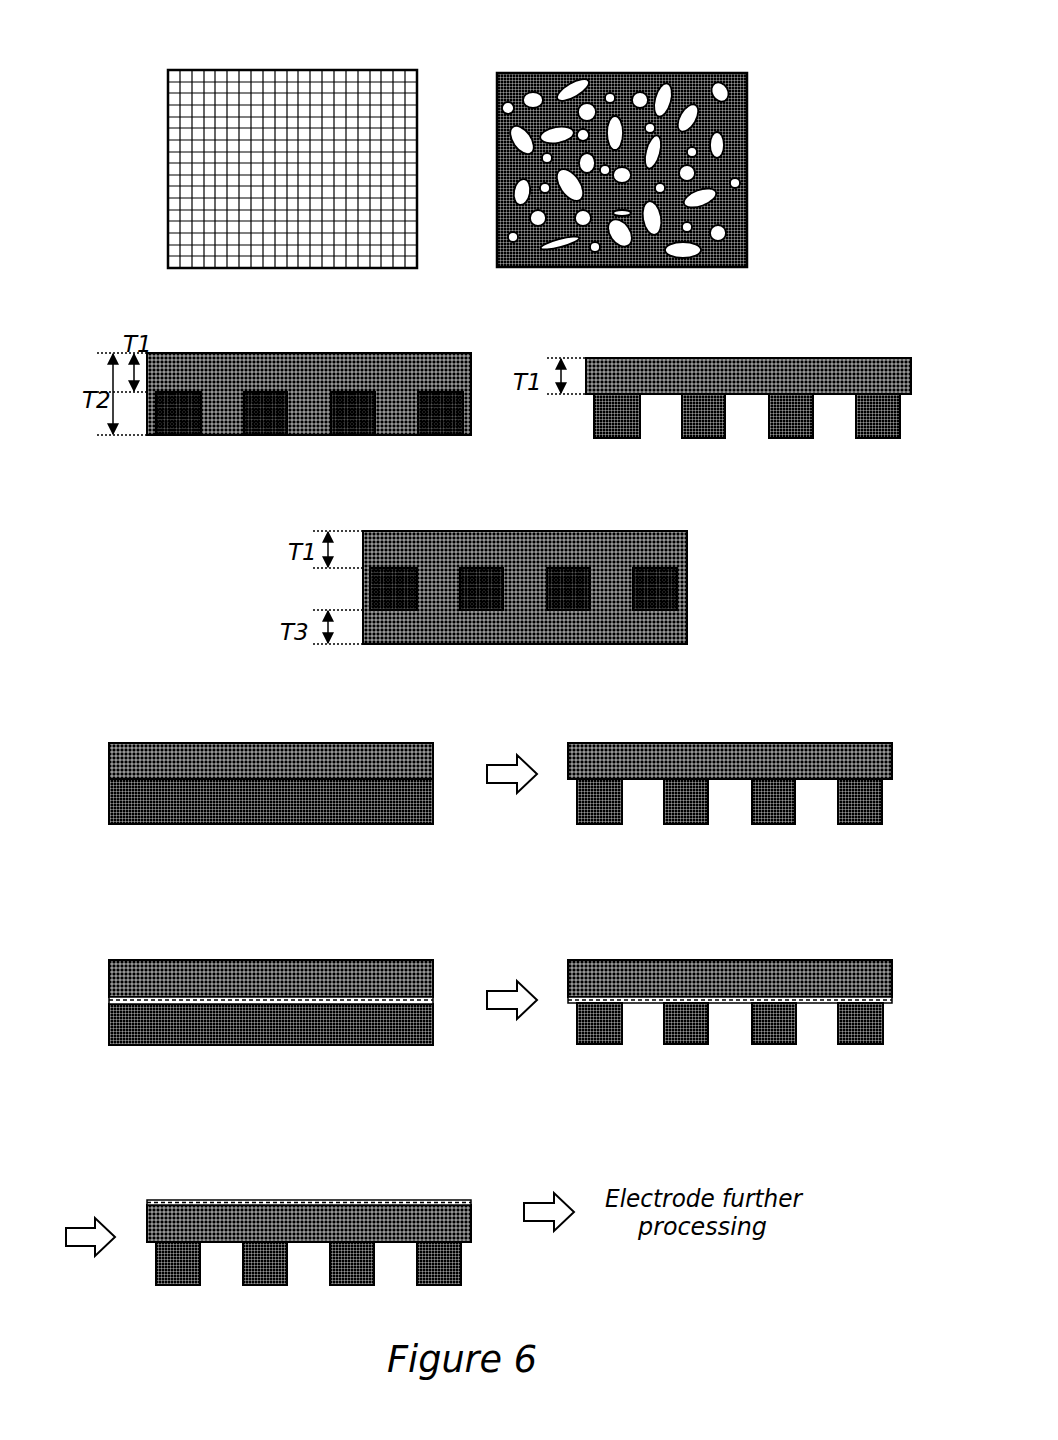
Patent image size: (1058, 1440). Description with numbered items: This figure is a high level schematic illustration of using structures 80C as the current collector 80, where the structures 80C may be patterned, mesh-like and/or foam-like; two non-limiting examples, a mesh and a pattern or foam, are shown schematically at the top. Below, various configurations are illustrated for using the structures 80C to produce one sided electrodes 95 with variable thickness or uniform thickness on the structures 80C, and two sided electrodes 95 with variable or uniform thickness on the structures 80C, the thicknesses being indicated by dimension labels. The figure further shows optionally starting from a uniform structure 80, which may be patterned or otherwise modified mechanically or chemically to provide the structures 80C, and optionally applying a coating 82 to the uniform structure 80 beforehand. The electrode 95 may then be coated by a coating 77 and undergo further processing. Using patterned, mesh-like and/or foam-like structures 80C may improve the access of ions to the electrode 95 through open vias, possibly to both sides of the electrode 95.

The structures 80C is at (250, 70).
The electrode 95 is at (392, 353).
The current collector 80 is at (207, 824).
The coating 82 is at (109, 998).
The coating 77 is at (147, 1205).